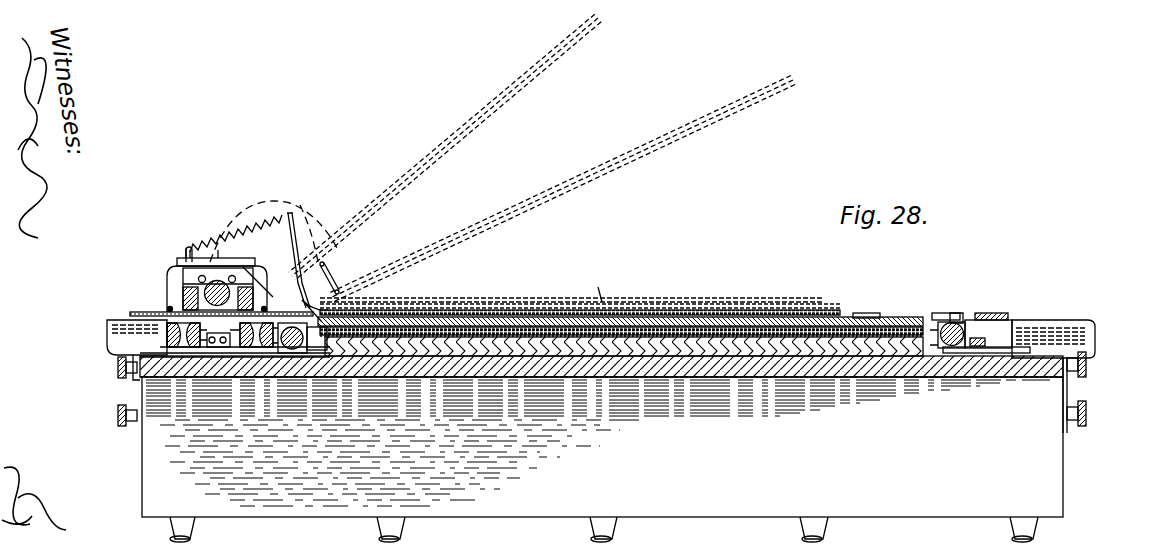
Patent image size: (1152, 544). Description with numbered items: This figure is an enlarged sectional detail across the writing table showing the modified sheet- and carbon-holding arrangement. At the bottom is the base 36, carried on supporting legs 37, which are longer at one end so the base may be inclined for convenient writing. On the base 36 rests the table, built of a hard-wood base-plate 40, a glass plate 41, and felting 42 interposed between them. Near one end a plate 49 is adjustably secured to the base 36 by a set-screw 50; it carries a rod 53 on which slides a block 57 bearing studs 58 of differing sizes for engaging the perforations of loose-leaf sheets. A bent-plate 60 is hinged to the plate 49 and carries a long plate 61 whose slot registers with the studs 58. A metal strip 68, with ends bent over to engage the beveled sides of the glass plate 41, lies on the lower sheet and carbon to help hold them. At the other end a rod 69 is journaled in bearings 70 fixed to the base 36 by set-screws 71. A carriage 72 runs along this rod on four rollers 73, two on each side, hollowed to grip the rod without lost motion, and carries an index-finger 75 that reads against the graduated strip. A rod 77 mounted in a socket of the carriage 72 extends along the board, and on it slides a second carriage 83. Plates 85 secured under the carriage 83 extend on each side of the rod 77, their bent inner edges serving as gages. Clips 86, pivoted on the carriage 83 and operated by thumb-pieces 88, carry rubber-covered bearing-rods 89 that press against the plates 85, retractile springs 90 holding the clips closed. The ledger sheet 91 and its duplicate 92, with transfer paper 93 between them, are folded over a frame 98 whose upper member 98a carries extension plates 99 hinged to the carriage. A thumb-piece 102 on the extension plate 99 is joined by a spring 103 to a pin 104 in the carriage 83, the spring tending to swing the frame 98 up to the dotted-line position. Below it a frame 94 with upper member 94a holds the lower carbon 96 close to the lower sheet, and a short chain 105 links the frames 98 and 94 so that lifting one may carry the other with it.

The supporting legs 37 is at (730, 498).
The base 36 is at (460, 368).
The base-plate 40 is at (535, 342).
The glass plate 41 is at (512, 320).
The felting 42 is at (492, 338).
The plate 49 is at (1002, 354).
The set-screws 50 is at (978, 346).
The rods 53 is at (296, 352).
The blocks 57 is at (303, 345).
The studs 58 is at (292, 352).
The bent-plate 60 is at (992, 330).
The long plate 61 is at (254, 350).
The metal strip 68 is at (882, 316).
The rod 69 is at (120, 348).
The bearings 70 is at (110, 335).
The set-screws 71 is at (118, 368).
The carriage 72 is at (186, 348).
The rollers 73 is at (174, 350).
The index-finger 75 is at (220, 348).
The rod 77 is at (190, 348).
The carriage 83 is at (185, 292).
The plates 85 is at (135, 313).
The clips 86 is at (180, 268).
The thumb-pieces 88 is at (195, 252).
The bearing-rods 89 is at (167, 308).
The retractile springs 90 is at (167, 276).
The upper sheet 91 is at (780, 301).
The duplicate sheet 92 is at (840, 310).
The transfer paper 93 is at (564, 46).
The rectangular frame 94 is at (793, 80).
The upper member 94a is at (648, 300).
The carbon or transfer paper 96 is at (668, 306).
The frame 98 is at (604, 25).
The upper member 98a is at (470, 301).
The extension plates 99 is at (325, 296).
The thumb-piece 102 is at (292, 225).
The spring 103 is at (258, 262).
The lug or pin 104 is at (188, 256).
The short chain 105 is at (334, 268).